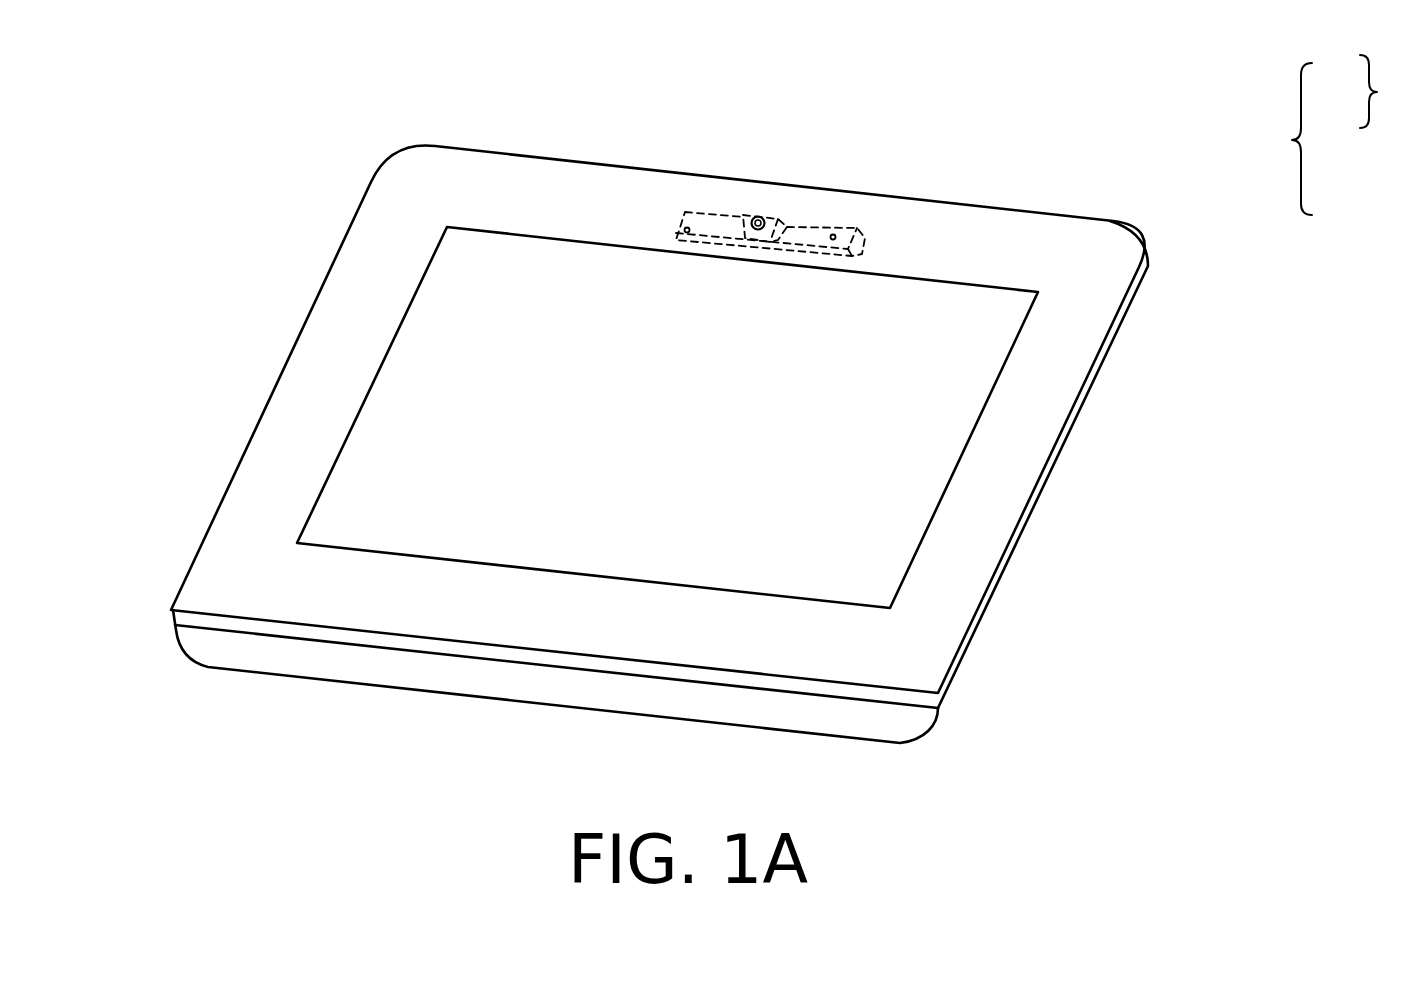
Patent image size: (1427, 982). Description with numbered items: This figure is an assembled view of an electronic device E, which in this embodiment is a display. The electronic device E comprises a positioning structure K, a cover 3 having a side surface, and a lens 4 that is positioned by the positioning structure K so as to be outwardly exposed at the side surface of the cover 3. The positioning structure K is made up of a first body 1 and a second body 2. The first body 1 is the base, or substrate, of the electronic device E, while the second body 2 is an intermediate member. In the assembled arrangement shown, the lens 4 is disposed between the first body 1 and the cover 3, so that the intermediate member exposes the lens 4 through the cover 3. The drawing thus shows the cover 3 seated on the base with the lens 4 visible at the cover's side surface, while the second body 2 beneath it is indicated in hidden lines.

The first body 1 is at (186, 650).
The second body 2 is at (815, 230).
The cover 3 is at (172, 613).
The lens 4 is at (759, 217).
The electronic device E is at (141, 49).
The positioning structure K is at (1383, 91).